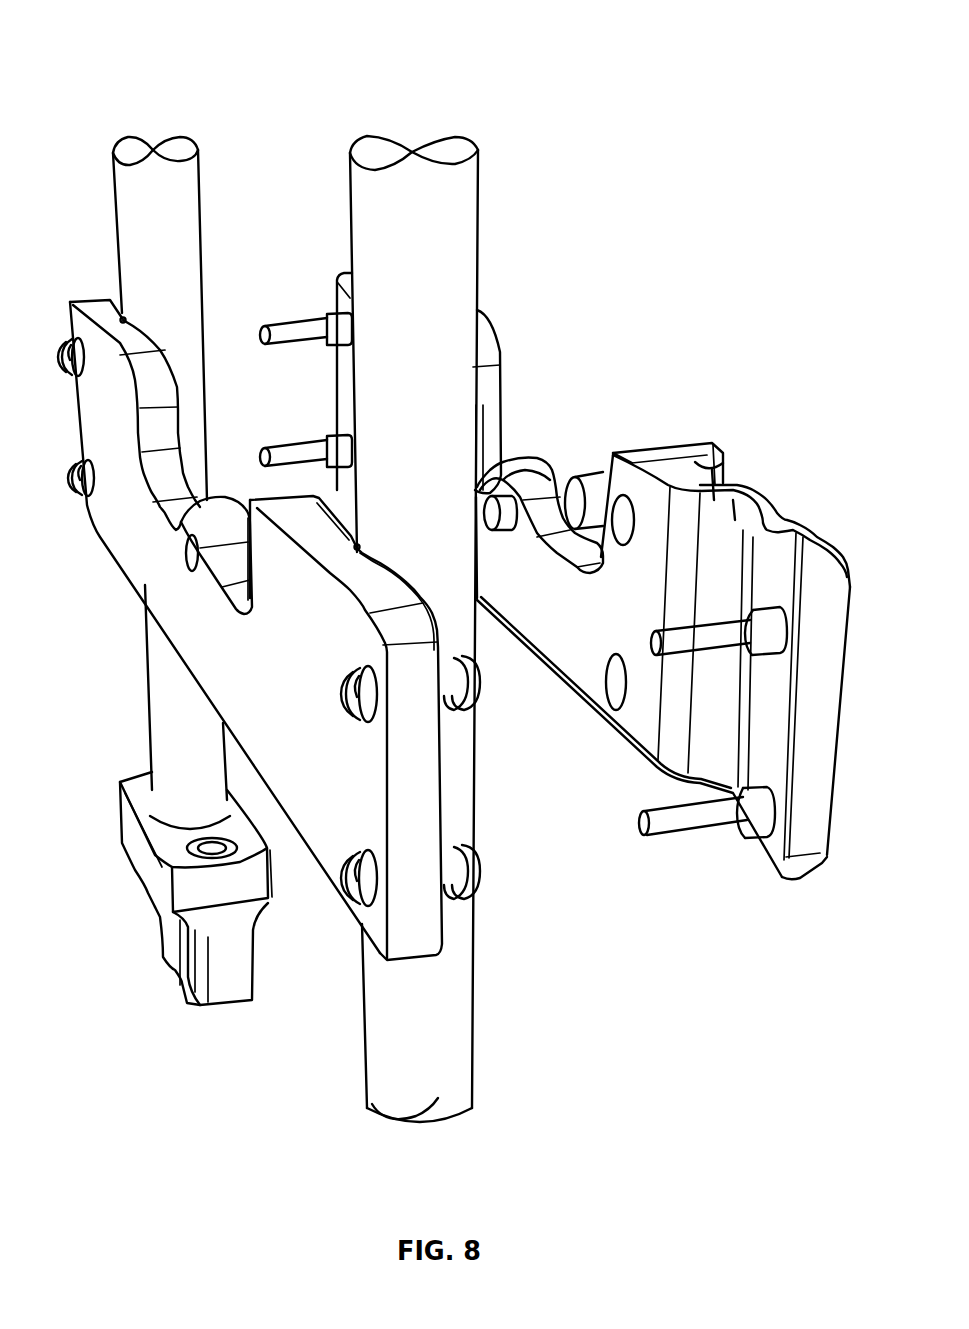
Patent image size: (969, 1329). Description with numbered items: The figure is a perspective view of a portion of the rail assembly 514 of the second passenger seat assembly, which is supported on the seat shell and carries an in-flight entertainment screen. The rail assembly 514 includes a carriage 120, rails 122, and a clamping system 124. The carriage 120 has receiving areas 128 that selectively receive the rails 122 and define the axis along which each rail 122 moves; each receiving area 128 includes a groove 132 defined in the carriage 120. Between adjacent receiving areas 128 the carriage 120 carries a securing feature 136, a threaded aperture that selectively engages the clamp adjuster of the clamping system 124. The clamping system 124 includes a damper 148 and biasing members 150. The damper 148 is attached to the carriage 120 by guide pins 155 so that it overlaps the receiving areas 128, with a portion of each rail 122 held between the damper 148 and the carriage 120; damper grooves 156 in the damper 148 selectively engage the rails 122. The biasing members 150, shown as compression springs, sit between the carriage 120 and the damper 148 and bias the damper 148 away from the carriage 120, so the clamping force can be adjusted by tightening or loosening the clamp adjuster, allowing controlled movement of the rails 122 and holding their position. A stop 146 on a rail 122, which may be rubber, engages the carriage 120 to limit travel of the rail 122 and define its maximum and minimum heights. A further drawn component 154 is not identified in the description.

The rail assembly 514 is at (136, 58).
The rail 122 is at (187, 189).
The damper 148 is at (105, 530).
The damper groove 156 is at (125, 318).
The guide pin 155 is at (288, 340).
The biasing member 150 is at (493, 710).
The stop 146 is at (218, 992).
The carriage 120 is at (790, 878).
The securing feature 136 is at (518, 462).
The spacer 154 is at (593, 492).
The groove 132 is at (718, 518).
The receiving area 128 is at (735, 513).
The clamping system 124 is at (596, 956).